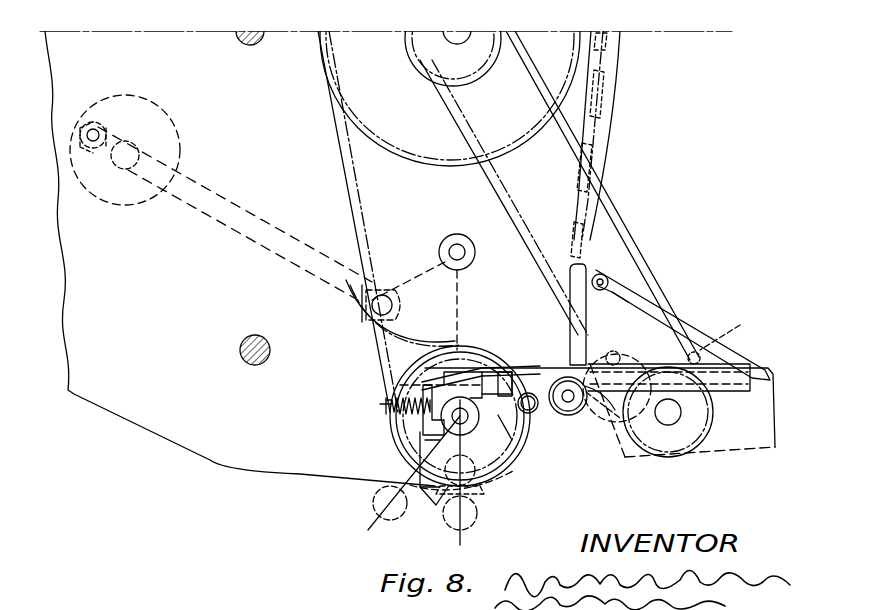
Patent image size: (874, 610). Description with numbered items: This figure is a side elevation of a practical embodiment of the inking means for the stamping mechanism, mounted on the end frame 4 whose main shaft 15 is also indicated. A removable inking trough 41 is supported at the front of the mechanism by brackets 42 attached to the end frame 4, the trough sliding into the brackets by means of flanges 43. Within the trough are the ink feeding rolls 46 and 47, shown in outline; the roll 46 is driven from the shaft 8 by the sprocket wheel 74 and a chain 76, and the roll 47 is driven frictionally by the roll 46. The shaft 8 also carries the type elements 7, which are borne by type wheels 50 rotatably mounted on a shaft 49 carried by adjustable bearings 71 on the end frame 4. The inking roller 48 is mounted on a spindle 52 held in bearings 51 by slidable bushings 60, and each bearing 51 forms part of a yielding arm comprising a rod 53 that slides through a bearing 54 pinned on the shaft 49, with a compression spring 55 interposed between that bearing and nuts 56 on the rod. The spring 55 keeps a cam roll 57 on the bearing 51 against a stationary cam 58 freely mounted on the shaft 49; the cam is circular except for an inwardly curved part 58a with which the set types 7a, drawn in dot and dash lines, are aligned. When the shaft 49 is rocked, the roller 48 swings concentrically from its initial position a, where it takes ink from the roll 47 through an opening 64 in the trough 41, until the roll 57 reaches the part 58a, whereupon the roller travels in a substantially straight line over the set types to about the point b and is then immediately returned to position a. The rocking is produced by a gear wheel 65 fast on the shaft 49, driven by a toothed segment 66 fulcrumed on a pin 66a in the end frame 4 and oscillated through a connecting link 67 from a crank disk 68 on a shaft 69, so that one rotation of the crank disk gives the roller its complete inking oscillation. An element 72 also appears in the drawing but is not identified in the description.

The end frame 4 is at (205, 450).
The type element 7 is at (596, 104).
The set types 7a is at (482, 494).
The shaft 8 is at (460, 40).
The main shaft 15 is at (250, 365).
The inking trough 41 is at (756, 436).
The bracket 42 is at (590, 268).
The flange 43 is at (742, 369).
The ink feeding roll 46 is at (700, 415).
The ink feeding roll 47 is at (640, 325).
The inking roller 48 is at (574, 416).
The shaft 49 is at (465, 420).
The type wheel 50 is at (478, 352).
The bearing 51 is at (500, 370).
The spindle 52 is at (630, 345).
The rod 53 is at (470, 372).
The bearing 54 is at (452, 380).
The compression spring 55 is at (398, 430).
The nut 56 is at (388, 402).
The cam roll 57 is at (512, 372).
The cam 58 is at (475, 440).
The inwardly curved part 58a is at (520, 492).
The bushing 60 is at (534, 412).
The opening 64 is at (595, 402).
The gear wheel 65 is at (505, 420).
The toothed segment 66 is at (368, 318).
The pin 66a is at (442, 245).
The connecting link 67 is at (205, 212).
The crank disk 68 is at (160, 122).
The shaft 69 is at (126, 168).
The bearing 71 is at (440, 438).
The bolt 72 is at (242, 44).
The sprocket wheel 74 is at (486, 74).
The chain 76 is at (628, 230).
The initial position a is at (592, 418).
The point b is at (400, 498).